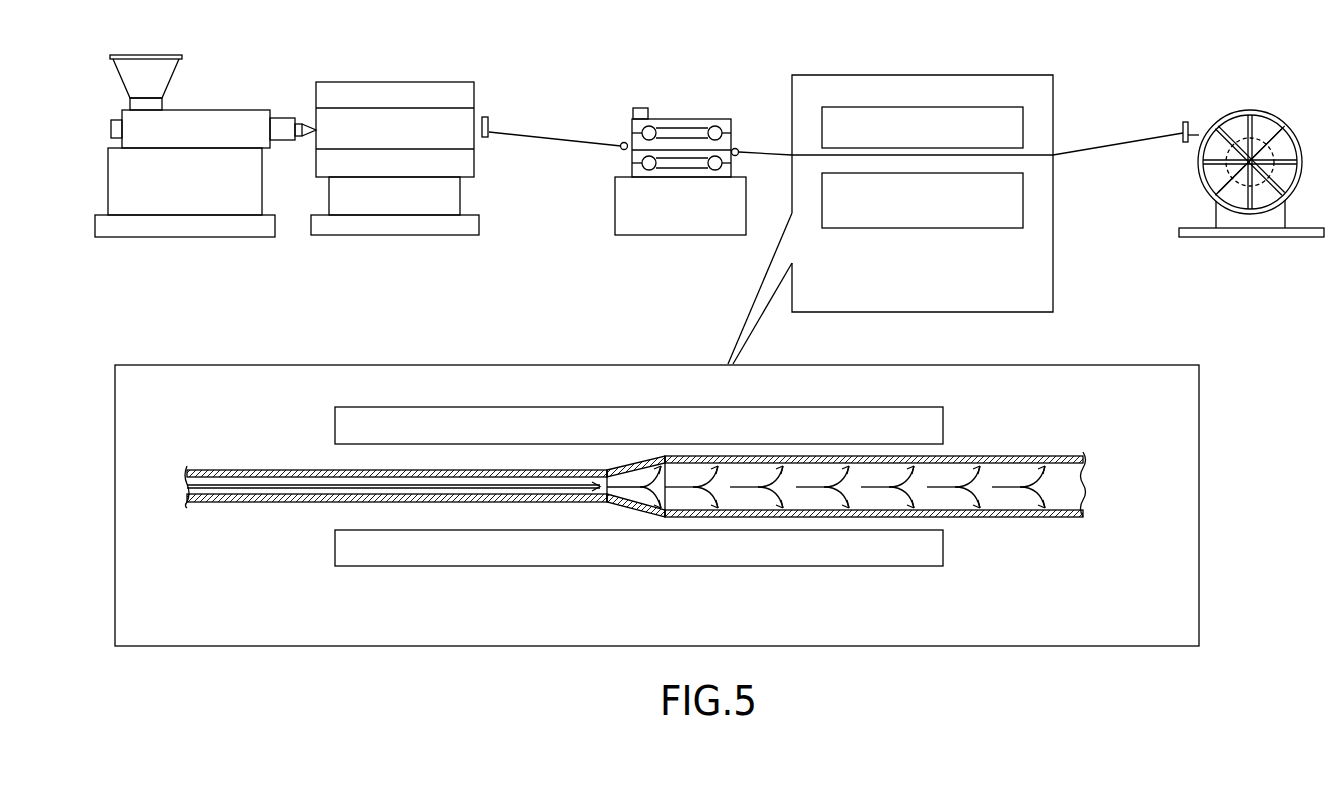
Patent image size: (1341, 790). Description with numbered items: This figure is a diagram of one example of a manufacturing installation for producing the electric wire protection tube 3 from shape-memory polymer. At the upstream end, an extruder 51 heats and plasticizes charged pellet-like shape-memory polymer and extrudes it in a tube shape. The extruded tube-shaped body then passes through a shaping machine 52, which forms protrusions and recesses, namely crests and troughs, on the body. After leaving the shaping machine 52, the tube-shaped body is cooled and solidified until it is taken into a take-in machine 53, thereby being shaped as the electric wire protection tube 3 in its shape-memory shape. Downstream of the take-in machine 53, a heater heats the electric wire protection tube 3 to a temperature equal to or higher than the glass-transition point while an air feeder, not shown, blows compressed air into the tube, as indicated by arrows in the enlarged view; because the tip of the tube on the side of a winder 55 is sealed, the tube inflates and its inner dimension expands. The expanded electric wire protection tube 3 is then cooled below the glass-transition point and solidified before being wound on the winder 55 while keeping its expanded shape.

The electric wire protection tube 3 is at (1014, 456).
The extruder 51 is at (186, 238).
The shaping machine 52 is at (396, 236).
The take-in machine 53 is at (681, 236).
The winder 55 is at (1251, 238).